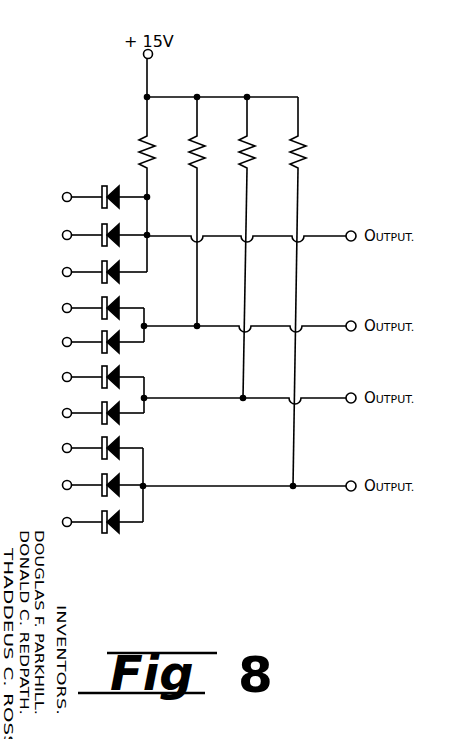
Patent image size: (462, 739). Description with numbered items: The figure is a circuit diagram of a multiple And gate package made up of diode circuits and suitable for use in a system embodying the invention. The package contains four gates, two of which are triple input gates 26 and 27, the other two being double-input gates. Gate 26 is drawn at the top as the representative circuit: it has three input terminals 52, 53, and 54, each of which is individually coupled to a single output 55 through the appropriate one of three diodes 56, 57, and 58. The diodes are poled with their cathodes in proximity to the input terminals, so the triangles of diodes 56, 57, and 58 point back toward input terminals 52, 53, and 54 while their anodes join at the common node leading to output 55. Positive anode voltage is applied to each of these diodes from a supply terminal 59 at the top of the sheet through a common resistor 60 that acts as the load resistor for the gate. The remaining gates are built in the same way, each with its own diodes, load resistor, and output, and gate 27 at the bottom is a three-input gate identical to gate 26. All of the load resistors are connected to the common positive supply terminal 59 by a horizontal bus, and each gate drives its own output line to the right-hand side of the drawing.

The supply terminal 59 is at (143, 54).
The common resistor 60 is at (139, 145).
The triple input gate 26 is at (150, 228).
The triple input gate 27 is at (151, 482).
The input terminal 52 is at (63, 194).
The input terminal 53 is at (63, 232).
The input terminal 54 is at (63, 269).
The output 55 is at (351, 246).
The diode 56 is at (101, 204).
The diode 57 is at (101, 242).
The diode 58 is at (101, 279).